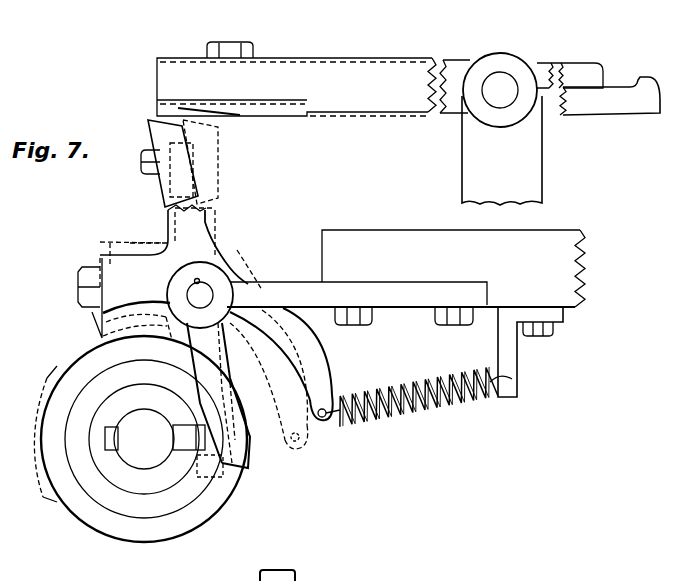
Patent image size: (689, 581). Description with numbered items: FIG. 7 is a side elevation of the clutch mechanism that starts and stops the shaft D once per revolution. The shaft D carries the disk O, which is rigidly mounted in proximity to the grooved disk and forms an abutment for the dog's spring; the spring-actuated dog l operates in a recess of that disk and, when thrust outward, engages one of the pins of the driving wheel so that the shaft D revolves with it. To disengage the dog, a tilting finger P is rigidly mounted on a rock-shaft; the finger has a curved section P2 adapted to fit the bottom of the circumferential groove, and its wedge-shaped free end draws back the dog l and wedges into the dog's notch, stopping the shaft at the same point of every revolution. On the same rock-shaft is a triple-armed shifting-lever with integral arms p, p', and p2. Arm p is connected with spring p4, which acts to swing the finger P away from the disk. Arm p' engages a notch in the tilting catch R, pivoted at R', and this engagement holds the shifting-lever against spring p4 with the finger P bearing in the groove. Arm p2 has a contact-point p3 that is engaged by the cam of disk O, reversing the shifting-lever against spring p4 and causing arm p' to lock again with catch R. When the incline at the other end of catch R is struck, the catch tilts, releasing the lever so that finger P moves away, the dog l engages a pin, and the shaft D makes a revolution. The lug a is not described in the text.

The tilting catch R is at (313, 79).
The pivot of catch R R' is at (532, 129).
The arm of shifting-lever p' is at (380, 192).
The arm of shifting-lever p is at (281, 378).
The arm of shifting-lever p2 is at (124, 290).
The contact-point p3 is at (113, 336).
The spring p4 is at (394, 386).
The lug a is at (57, 372).
The shaft D is at (144, 439).
The spring-actuated dog l is at (155, 437).
The tilting finger P is at (218, 395).
The curved section of finger P2 is at (216, 458).
The disk O is at (144, 439).